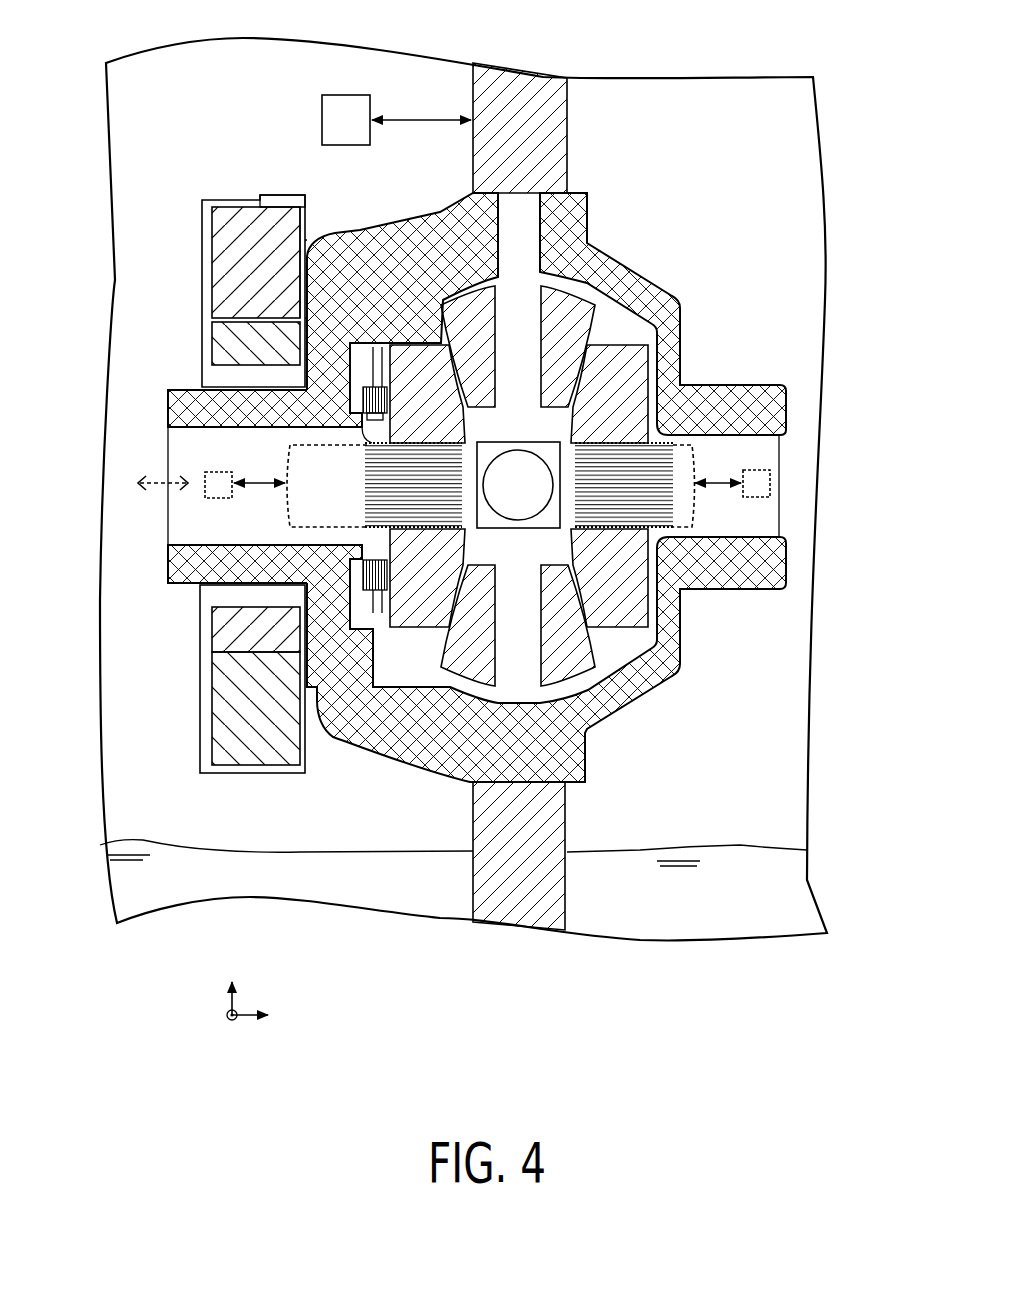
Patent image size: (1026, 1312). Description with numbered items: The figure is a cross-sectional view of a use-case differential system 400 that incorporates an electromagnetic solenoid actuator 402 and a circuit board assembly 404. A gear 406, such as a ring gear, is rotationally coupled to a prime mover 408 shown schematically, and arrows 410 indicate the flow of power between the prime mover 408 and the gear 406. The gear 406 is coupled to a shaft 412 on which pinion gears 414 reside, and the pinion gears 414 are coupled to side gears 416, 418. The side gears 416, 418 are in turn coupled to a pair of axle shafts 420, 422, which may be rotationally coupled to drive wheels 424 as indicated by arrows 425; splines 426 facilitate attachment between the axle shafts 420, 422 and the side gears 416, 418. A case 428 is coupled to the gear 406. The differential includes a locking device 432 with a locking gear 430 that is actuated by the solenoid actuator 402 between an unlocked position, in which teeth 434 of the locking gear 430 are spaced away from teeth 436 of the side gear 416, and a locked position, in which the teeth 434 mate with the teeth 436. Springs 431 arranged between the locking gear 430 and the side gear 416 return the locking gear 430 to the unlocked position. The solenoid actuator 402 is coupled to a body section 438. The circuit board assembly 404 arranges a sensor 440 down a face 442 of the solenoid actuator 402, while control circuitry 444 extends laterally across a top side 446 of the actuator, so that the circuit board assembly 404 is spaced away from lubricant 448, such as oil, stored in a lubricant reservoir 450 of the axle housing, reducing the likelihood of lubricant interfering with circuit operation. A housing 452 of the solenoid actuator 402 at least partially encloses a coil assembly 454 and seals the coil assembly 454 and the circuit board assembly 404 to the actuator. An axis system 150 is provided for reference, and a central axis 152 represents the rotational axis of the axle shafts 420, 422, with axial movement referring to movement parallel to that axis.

The differential system 400 is at (818, 55).
The electromagnetic solenoid actuator 402 is at (242, 263).
The circuit board assembly 404 is at (312, 186).
The gear 406 is at (540, 107).
The prime mover 408 is at (321, 128).
The arrows 410 is at (421, 124).
The shaft 412 is at (518, 225).
The gears 414 is at (593, 300).
The side gear 416 is at (412, 635).
The side gear 418 is at (623, 397).
The axle shaft 420 is at (300, 527).
The axle shaft 422 is at (697, 450).
The drive wheels 424 is at (216, 470).
The arrows 425 is at (263, 480).
The splines 426 is at (378, 507).
The case 428 is at (383, 212).
The locking gear 430 is at (327, 318).
The springs 431 is at (352, 418).
The locking device 432 is at (302, 298).
The teeth 434 is at (375, 347).
The teeth 436 is at (392, 345).
The body section 438 is at (200, 405).
The sensor 440 is at (300, 228).
The face 442 is at (302, 238).
The control circuitry 444 is at (282, 197).
The top side 446 is at (232, 193).
The lubricant 448 is at (421, 894).
The lubricant reservoir 450 is at (352, 833).
The housing 452 is at (207, 230).
The coil assembly 454 is at (232, 300).
The axis system 150 is at (268, 997).
The central axis 152 is at (155, 488).